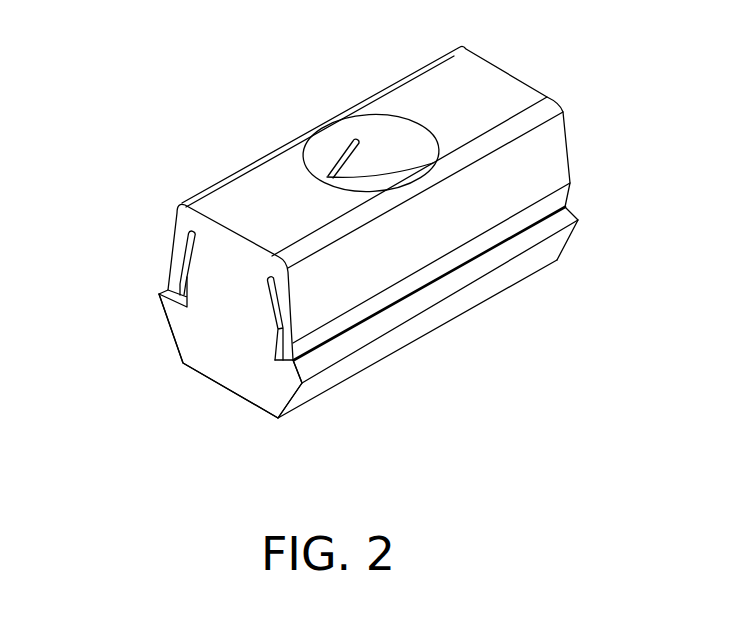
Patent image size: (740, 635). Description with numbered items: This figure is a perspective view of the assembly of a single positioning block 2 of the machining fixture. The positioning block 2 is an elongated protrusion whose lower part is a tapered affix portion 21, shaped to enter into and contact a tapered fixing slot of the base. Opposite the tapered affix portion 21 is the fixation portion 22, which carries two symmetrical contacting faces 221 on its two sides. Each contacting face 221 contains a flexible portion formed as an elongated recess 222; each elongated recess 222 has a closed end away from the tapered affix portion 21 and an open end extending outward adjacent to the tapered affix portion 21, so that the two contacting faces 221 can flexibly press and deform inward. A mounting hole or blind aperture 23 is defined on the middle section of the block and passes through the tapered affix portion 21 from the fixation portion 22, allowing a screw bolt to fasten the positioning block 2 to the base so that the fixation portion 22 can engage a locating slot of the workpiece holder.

The positioning block 2 is at (308, 231).
The tapered affix portion 21 is at (223, 365).
The fixation portion 22 is at (308, 214).
The contacting face 221 is at (172, 243).
The elongated recess 222 is at (188, 260).
The mounting hole or blind aperture 23 is at (383, 137).